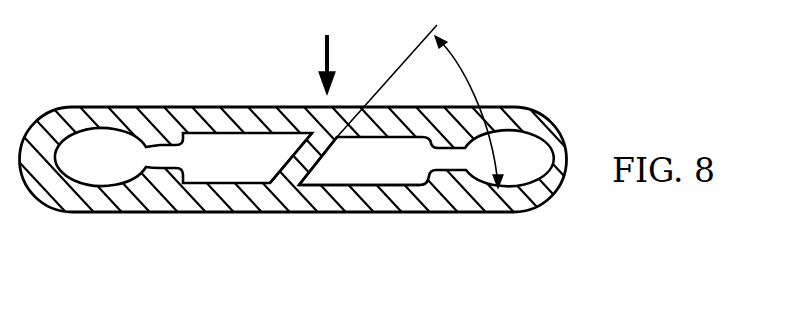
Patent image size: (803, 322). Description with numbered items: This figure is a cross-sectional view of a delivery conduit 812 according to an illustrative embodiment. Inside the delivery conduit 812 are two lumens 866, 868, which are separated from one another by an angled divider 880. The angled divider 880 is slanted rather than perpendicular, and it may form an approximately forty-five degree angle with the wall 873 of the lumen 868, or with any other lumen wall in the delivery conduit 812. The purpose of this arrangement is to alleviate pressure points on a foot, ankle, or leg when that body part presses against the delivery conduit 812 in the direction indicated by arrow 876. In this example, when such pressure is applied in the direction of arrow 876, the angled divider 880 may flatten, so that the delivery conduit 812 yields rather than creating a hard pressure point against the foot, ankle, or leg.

The delivery conduit 812 is at (527, 93).
The lumen 866 is at (103, 170).
The lumen 868 is at (526, 149).
The wall 873 is at (352, 188).
The arrow 876 is at (323, 63).
The angled divider 880 is at (297, 148).